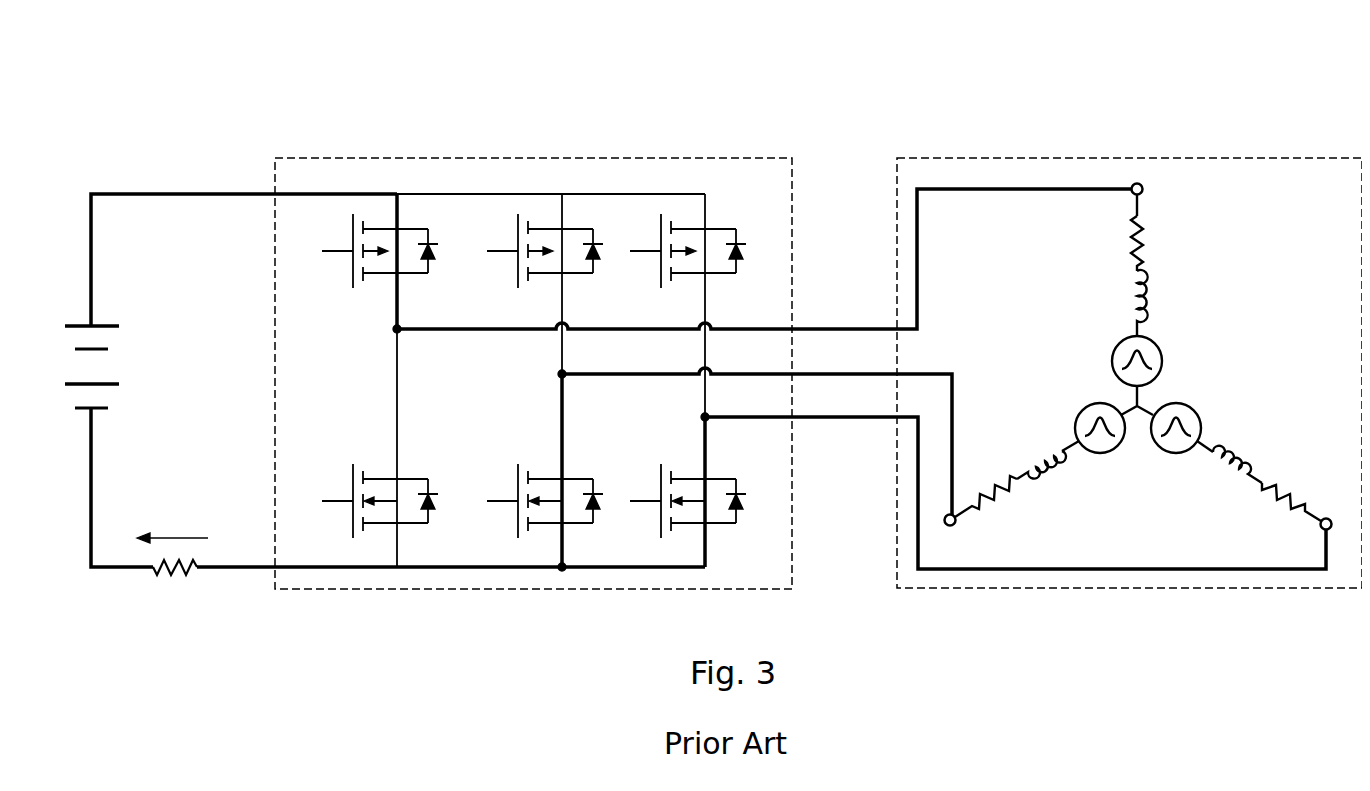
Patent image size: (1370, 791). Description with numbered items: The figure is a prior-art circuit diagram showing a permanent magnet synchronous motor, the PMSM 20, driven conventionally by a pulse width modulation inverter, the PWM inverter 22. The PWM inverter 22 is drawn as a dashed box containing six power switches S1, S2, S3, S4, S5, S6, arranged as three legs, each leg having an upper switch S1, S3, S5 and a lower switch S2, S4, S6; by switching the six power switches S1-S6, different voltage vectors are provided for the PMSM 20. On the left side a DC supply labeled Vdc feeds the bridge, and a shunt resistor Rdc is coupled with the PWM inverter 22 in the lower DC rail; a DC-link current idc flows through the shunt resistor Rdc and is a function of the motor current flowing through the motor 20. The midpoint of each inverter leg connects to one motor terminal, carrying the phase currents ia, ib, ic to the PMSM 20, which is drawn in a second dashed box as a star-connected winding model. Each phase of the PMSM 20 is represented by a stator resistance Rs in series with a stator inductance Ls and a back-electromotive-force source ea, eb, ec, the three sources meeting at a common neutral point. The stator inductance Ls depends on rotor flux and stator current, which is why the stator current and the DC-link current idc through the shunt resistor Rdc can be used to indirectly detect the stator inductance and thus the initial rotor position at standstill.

The PWM inverter 22 is at (800, 318).
The PMSM 20 is at (1129, 316).
The power switch S1 is at (372, 258).
The power switch S2 is at (372, 501).
The power switch S3 is at (538, 258).
The power switch S4 is at (538, 501).
The power switch S5 is at (680, 258).
The power switch S6 is at (680, 501).
The DC supply voltage source Vdc is at (118, 367).
The shunt resistor Rdc is at (174, 596).
The DC-link current idc is at (172, 523).
The phase a current ia is at (880, 312).
The phase b current ib is at (895, 358).
The phase c current ic is at (895, 398).
The stator resistance Rs is at (1164, 243).
The stator inductance Ls is at (1166, 303).
The phase a back-EMF ea is at (1154, 361).
The phase b back-EMF eb is at (1088, 415).
The phase c back-EMF ec is at (1190, 417).